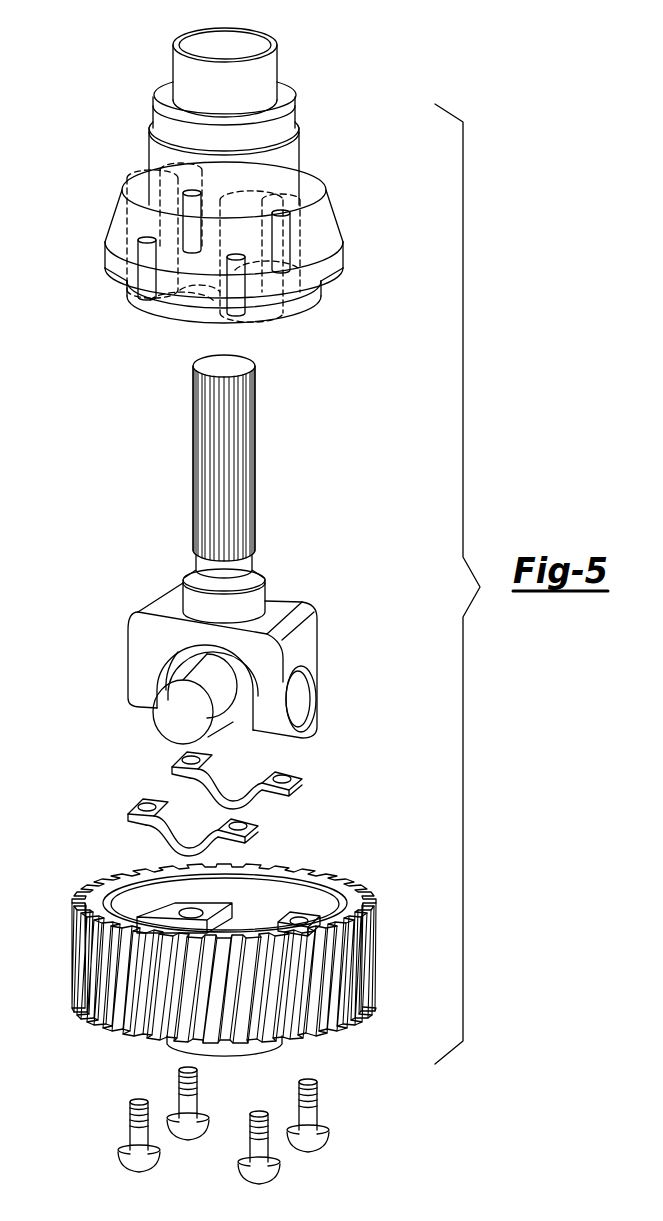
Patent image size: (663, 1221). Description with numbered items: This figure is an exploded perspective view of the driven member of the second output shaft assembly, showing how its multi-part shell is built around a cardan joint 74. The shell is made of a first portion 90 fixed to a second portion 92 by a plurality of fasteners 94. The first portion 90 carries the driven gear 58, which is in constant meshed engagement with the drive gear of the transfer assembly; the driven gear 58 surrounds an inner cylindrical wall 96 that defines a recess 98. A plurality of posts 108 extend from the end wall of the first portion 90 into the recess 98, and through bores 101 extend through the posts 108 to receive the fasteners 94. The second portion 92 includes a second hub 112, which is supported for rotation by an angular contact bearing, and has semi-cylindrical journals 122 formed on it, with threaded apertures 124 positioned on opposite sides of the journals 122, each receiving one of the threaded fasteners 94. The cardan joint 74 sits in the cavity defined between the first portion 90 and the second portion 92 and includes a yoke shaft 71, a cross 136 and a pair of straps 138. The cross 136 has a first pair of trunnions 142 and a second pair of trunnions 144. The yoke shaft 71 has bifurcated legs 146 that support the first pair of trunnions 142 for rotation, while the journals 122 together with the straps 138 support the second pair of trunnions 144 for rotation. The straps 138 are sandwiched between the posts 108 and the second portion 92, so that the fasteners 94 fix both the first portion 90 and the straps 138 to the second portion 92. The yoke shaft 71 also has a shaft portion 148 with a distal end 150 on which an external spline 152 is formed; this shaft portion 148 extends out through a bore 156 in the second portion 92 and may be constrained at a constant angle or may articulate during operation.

The bore 156 is at (205, 50).
The second hub 112 is at (293, 147).
The second portion 92 is at (207, 266).
The semi-cylindrical journals 122 is at (173, 312).
The threaded apertures 124 is at (147, 310).
The shaft portion 148 is at (208, 458).
The distal end 150 is at (193, 385).
The external spline 152 is at (207, 462).
The yoke shaft 71 is at (252, 560).
The cardan joint 74 is at (216, 668).
The bifurcated legs 146 is at (142, 668).
The first pair of trunnions 142 is at (297, 712).
The second pair of trunnions 144 is at (178, 714).
The cross 136 is at (240, 714).
The straps 138 is at (133, 800).
The first portion 90 is at (230, 941).
The driven gear 58 is at (340, 980).
The inner cylindrical wall 96 is at (122, 907).
The recess 98 is at (243, 885).
The through bores 101 is at (183, 913).
The posts 108 is at (240, 923).
The fasteners 94 is at (195, 1133).